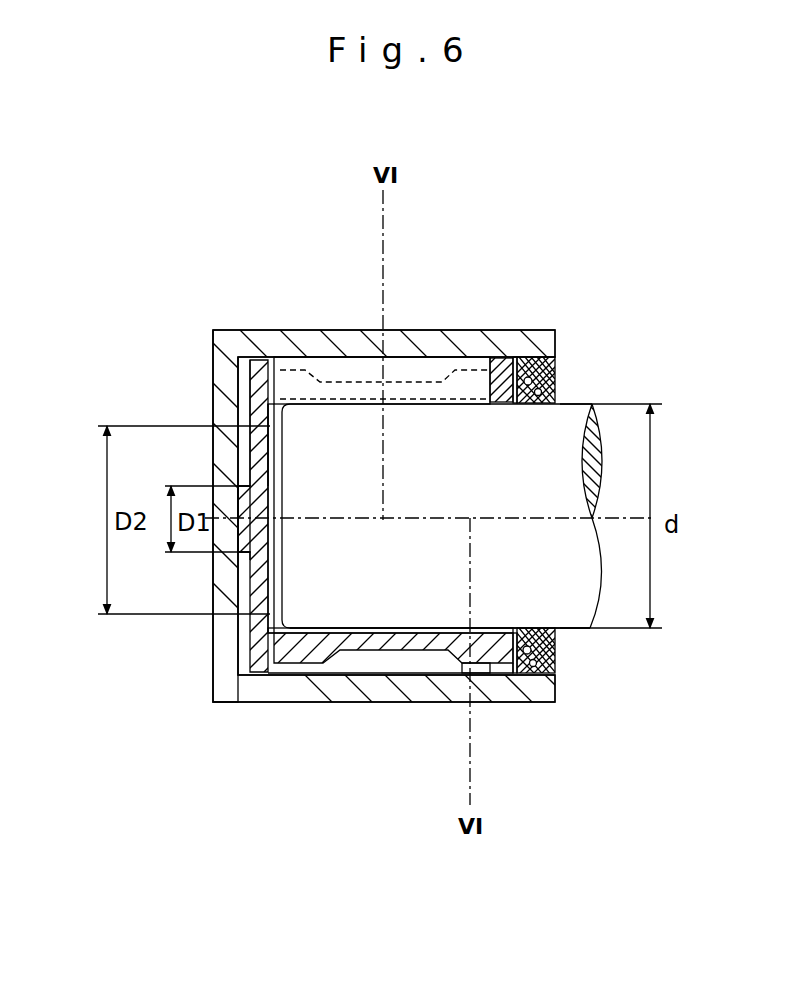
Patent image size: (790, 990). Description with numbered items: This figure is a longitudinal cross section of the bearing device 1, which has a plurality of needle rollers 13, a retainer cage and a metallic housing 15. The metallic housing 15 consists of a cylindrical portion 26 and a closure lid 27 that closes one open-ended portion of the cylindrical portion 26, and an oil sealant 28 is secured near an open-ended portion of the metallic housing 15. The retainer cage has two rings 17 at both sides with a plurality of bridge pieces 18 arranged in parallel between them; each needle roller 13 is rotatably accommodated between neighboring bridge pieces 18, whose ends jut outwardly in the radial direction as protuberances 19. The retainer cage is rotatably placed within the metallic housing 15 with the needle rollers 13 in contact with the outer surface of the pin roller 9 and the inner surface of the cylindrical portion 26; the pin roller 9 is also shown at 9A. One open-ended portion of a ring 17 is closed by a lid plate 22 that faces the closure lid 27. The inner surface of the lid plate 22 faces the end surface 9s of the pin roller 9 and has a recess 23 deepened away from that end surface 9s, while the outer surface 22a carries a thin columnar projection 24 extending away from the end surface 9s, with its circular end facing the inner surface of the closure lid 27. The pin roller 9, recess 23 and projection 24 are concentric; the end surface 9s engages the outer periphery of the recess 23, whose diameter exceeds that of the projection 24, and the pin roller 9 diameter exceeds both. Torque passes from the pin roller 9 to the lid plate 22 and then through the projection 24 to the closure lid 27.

The bearing device 1 is at (176, 288).
The pin roller 9 is at (578, 633).
The shaft small-diameter portion 9A is at (340, 612).
The end surface of the pin roller 9s is at (250, 500).
The needle rollers 13 is at (445, 375).
The metallic housing 15 is at (514, 326).
The rings 17 is at (265, 645).
The bridge pieces 18 is at (388, 652).
The protuberances 19 is at (290, 648).
The lid plate 22 is at (247, 461).
The outer surface of the lid plate 22a is at (248, 398).
The recess 23 is at (263, 460).
The projection 24 is at (238, 553).
The cylindrical portion 26 is at (404, 350).
The closure lid 27 is at (220, 681).
The oil sealant 28 is at (554, 362).